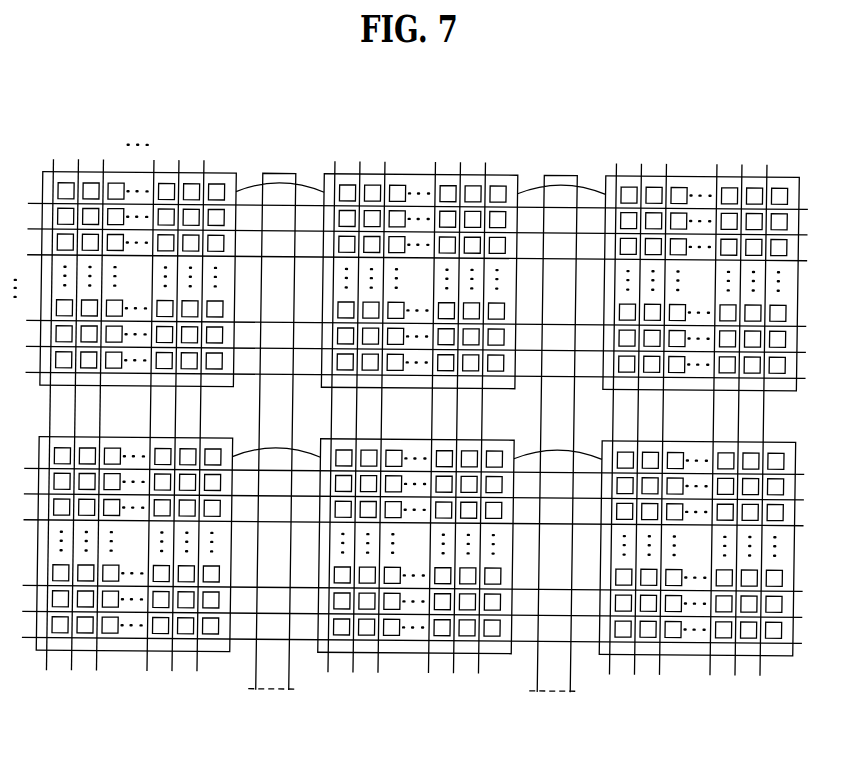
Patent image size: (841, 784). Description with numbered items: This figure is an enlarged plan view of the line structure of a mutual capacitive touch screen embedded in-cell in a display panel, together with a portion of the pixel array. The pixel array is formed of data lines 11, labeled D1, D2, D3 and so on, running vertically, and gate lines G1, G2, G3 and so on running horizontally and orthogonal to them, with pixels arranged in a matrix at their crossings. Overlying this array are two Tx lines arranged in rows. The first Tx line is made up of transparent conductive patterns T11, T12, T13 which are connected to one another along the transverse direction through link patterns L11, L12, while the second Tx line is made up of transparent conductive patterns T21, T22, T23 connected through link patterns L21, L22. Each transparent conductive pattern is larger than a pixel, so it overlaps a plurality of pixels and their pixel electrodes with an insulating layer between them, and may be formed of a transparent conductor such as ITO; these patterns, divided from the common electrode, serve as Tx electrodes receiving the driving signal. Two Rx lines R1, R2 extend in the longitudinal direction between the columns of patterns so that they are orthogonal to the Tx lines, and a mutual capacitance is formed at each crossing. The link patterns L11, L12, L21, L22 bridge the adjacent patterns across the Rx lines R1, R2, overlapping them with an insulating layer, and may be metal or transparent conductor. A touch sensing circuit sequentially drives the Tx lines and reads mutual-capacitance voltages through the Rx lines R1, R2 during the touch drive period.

The data line 11 is at (160, 185).
The transparent conductive pattern T11 is at (214, 175).
The transparent conductive pattern T12 is at (494, 175).
The transparent conductive pattern T13 is at (772, 177).
The transparent conductive pattern T21 is at (218, 441).
The transparent conductive pattern T22 is at (500, 441).
The transparent conductive pattern T23 is at (778, 441).
The link pattern L11 is at (276, 182).
The link pattern L12 is at (558, 182).
The link pattern L21 is at (279, 449).
The link pattern L22 is at (558, 449).
The data line D1 is at (49, 402).
The data line D2 is at (74, 402).
The data line D3 is at (99, 402).
The gate line G1 is at (408, 206).
The gate line G2 is at (407, 232).
The gate line G3 is at (407, 258).
The Rx line R1 is at (276, 681).
The Rx line R2 is at (557, 681).